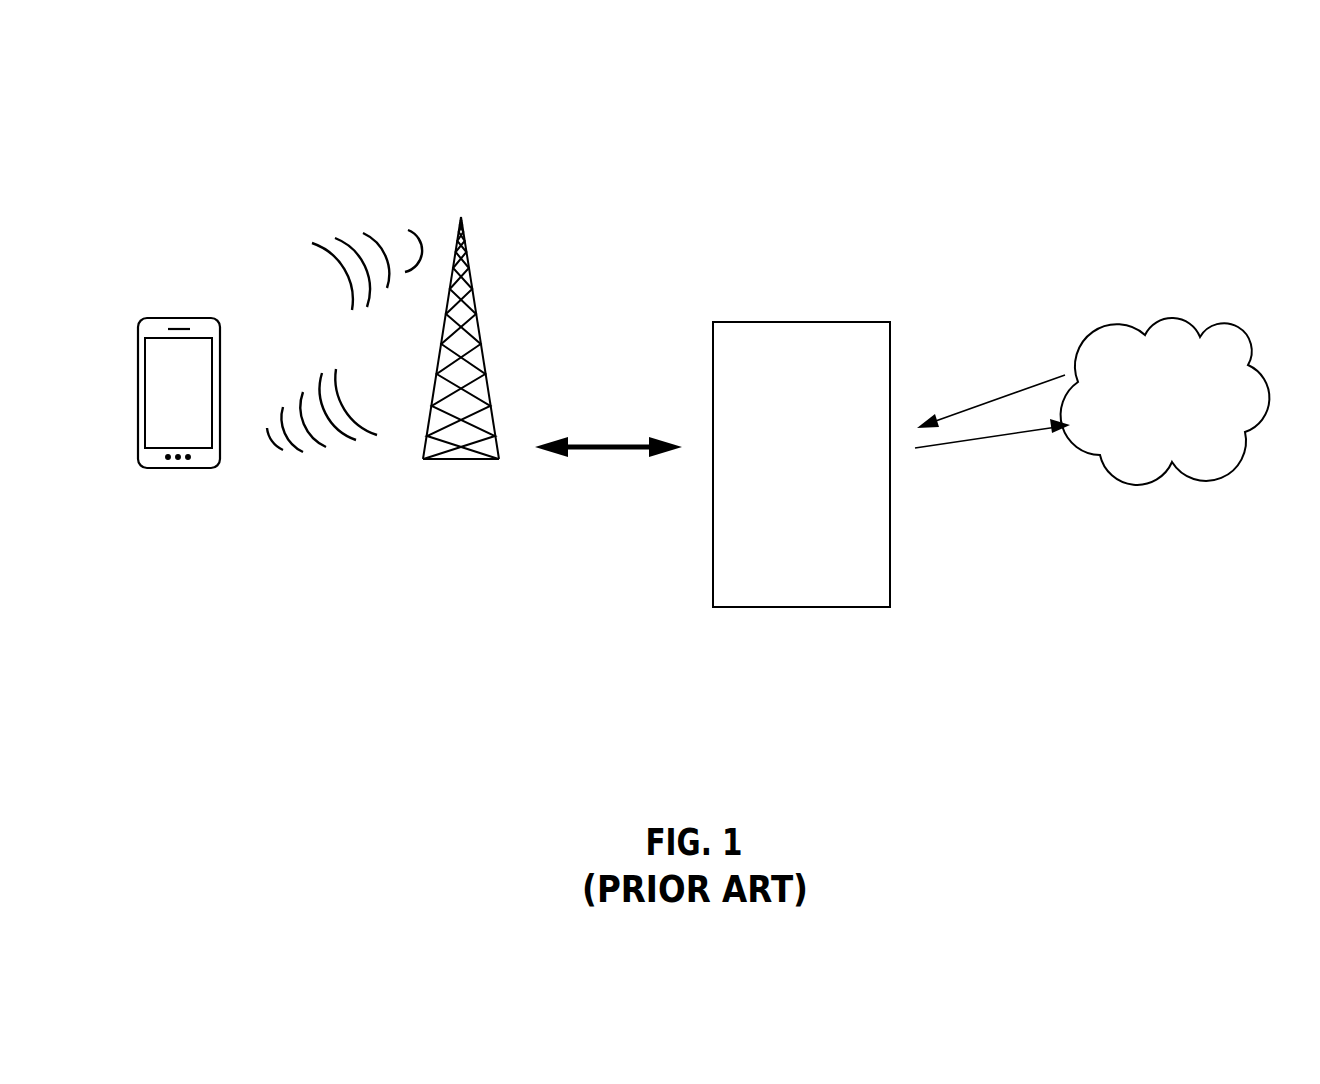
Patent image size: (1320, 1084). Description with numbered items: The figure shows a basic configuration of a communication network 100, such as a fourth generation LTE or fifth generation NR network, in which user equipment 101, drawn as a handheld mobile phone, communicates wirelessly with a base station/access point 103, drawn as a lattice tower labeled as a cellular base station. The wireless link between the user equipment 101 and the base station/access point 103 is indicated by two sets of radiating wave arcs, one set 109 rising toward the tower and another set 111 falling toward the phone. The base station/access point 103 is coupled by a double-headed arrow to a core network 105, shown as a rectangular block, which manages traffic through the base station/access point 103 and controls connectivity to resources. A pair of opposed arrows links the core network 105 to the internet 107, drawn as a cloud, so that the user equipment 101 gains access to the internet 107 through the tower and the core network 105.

The communication network 100 is at (926, 206).
The user equipment (UE) 101 is at (192, 303).
The base station/access point (BS/AP) 103 is at (484, 280).
The core network 105 is at (823, 308).
The internet 107 is at (1157, 308).
The uplink wireless signals 109 is at (373, 205).
The downlink wireless signals 111 is at (315, 465).